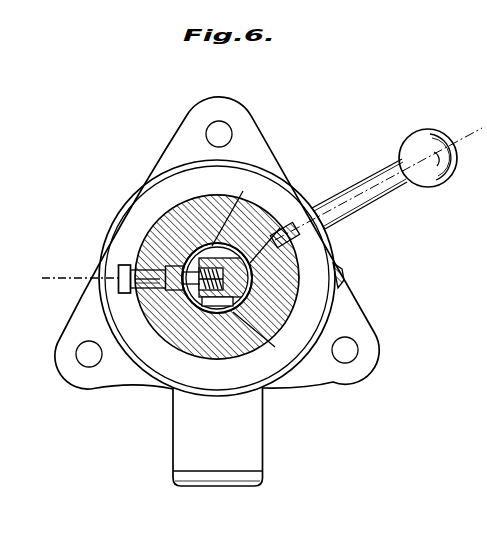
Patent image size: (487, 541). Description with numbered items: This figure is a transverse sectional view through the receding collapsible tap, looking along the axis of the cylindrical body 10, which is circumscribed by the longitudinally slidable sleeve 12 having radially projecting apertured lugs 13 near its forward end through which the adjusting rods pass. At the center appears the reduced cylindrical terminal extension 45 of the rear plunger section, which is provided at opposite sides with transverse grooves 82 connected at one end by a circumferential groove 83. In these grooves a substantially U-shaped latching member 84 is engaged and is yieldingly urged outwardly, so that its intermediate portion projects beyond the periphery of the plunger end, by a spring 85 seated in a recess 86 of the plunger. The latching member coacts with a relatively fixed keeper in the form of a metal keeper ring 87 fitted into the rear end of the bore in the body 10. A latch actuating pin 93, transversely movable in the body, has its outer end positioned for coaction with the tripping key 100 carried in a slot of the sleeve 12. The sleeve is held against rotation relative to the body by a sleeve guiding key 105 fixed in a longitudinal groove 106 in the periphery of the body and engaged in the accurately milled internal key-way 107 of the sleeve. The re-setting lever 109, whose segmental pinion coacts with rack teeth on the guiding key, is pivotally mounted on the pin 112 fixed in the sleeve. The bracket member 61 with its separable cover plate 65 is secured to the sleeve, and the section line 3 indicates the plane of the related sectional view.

The section line 3- 3 is at (52, 289).
The body 10 is at (176, 220).
The sleeve 12 is at (142, 198).
The apertured lugs 13 is at (250, 120).
The reduced cylindrical terminal extension 45 is at (253, 265).
The bracket member 61 is at (256, 422).
The cover plate 65 is at (262, 472).
The transverse grooves 82 is at (255, 264).
The circumferential groove 83 is at (200, 262).
The latching member 84 is at (212, 307).
The spring 85 is at (214, 301).
The recess 86 is at (197, 310).
The keeper ring 87 is at (233, 300).
The latch actuating pin 93 is at (170, 290).
The tripping key 100 is at (118, 275).
The sleeve guiding key 105 is at (318, 206).
The longitudinal groove 106 is at (290, 225).
The internal key-way 107 is at (326, 231).
The re-setting lever 109 is at (399, 187).
The pin 112 is at (344, 271).